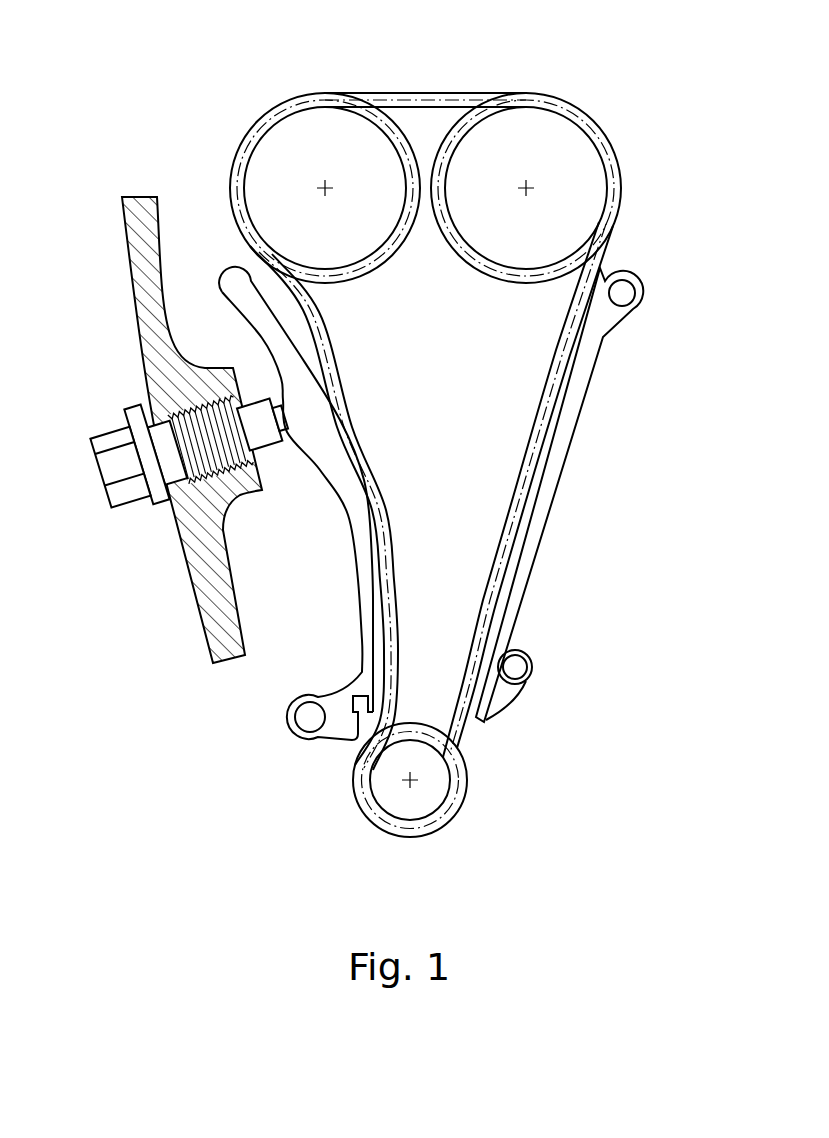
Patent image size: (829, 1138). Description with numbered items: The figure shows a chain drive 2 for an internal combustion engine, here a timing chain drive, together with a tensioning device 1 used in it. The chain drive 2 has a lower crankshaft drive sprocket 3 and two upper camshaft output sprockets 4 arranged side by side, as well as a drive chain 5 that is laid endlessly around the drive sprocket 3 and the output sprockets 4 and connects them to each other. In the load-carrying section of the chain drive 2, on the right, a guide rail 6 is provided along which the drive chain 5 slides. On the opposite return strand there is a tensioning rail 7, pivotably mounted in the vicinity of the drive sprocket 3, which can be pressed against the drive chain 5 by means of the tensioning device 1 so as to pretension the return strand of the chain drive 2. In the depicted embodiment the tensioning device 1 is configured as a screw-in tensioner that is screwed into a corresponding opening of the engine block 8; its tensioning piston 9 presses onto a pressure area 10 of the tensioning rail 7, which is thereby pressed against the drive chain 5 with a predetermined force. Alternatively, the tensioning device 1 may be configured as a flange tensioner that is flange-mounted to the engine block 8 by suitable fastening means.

The tensioning device 1 is at (180, 467).
The chain drive 2 is at (472, 425).
The crankshaft drive sprocket 3 is at (428, 797).
The camshaft output sprockets 4 is at (289, 133).
The drive chain 5 is at (430, 88).
The guide rail 6 is at (560, 487).
The tensioning rail 7 is at (362, 633).
The engine block 8 is at (130, 266).
The tensioning piston 9 is at (284, 440).
The pressure area 10 is at (266, 401).